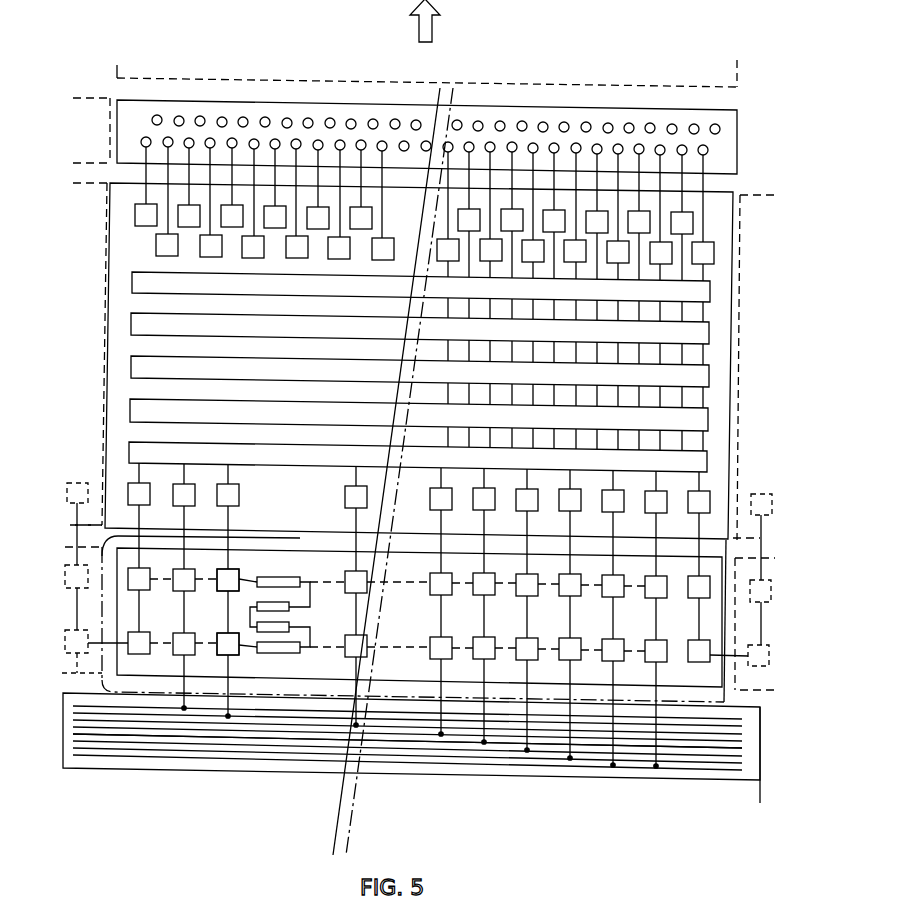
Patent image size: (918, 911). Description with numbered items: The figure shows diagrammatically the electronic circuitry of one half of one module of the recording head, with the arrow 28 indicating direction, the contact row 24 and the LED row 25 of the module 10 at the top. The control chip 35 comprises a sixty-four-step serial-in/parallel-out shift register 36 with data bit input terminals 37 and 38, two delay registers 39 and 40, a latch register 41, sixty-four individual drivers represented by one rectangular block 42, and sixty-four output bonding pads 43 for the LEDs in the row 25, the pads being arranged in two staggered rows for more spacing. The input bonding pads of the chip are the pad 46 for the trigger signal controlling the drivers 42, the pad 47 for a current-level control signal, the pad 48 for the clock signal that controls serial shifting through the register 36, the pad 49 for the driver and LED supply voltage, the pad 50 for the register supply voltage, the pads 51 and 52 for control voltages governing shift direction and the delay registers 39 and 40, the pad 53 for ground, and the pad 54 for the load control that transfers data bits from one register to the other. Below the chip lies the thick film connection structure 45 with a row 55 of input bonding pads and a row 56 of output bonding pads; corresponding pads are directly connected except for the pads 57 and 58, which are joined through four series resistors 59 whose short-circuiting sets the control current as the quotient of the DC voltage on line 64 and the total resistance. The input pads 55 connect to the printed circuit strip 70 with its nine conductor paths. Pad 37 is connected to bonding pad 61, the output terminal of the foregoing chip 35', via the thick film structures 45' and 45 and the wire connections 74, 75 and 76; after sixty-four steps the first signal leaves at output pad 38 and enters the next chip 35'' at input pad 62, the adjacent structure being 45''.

The feed direction arrow 28 is at (432, 26).
The electrode contacts 24 is at (152, 121).
The LED row 25 is at (141, 142).
The electrode array 10 is at (737, 135).
The output bonding pads 43 is at (165, 245).
The drivers 42 is at (136, 282).
The latch register 41 is at (136, 323).
The delay register 40 is at (136, 366).
The delay register 39 is at (136, 410).
The shift register 36 is at (136, 454).
The data bit input terminal 37 is at (138, 490).
The trigger signal pad 46 is at (180, 500).
The current-level control pad 47 is at (224, 500).
The clock signal pad 48 is at (355, 497).
The driver supply voltage pad 49 is at (440, 500).
The register supply voltage pad 50 is at (488, 502).
The control voltage pad 51 is at (531, 502).
The control voltage pad 52 is at (574, 504).
The ground connection pad 53 is at (616, 504).
The load control pad 54 is at (660, 504).
The data bit output terminal 38 is at (706, 505).
The control chip 35 is at (441, 361).
The foregoing control chip 35' is at (90, 354).
The next control chip 35'' is at (762, 442).
The output shift register terminal 61 is at (67, 490).
The input pad 62 is at (762, 494).
The wire connection 74 is at (75, 527).
The wire connection 76 is at (106, 545).
The wire connection 75 is at (108, 663).
The bonding pad 58 is at (222, 580).
The bonding pad 57 is at (230, 652).
The series resistors 59 is at (296, 650).
The row of input bonding pads 55 is at (393, 652).
The row of output bonding pads 56 is at (415, 586).
The thick film connection structure 45 is at (407, 738).
The thick film connection structure 45' is at (407, 764).
The data line 45'' is at (728, 752).
The line 64 is at (250, 717).
The printed circuit strip 70 is at (625, 775).